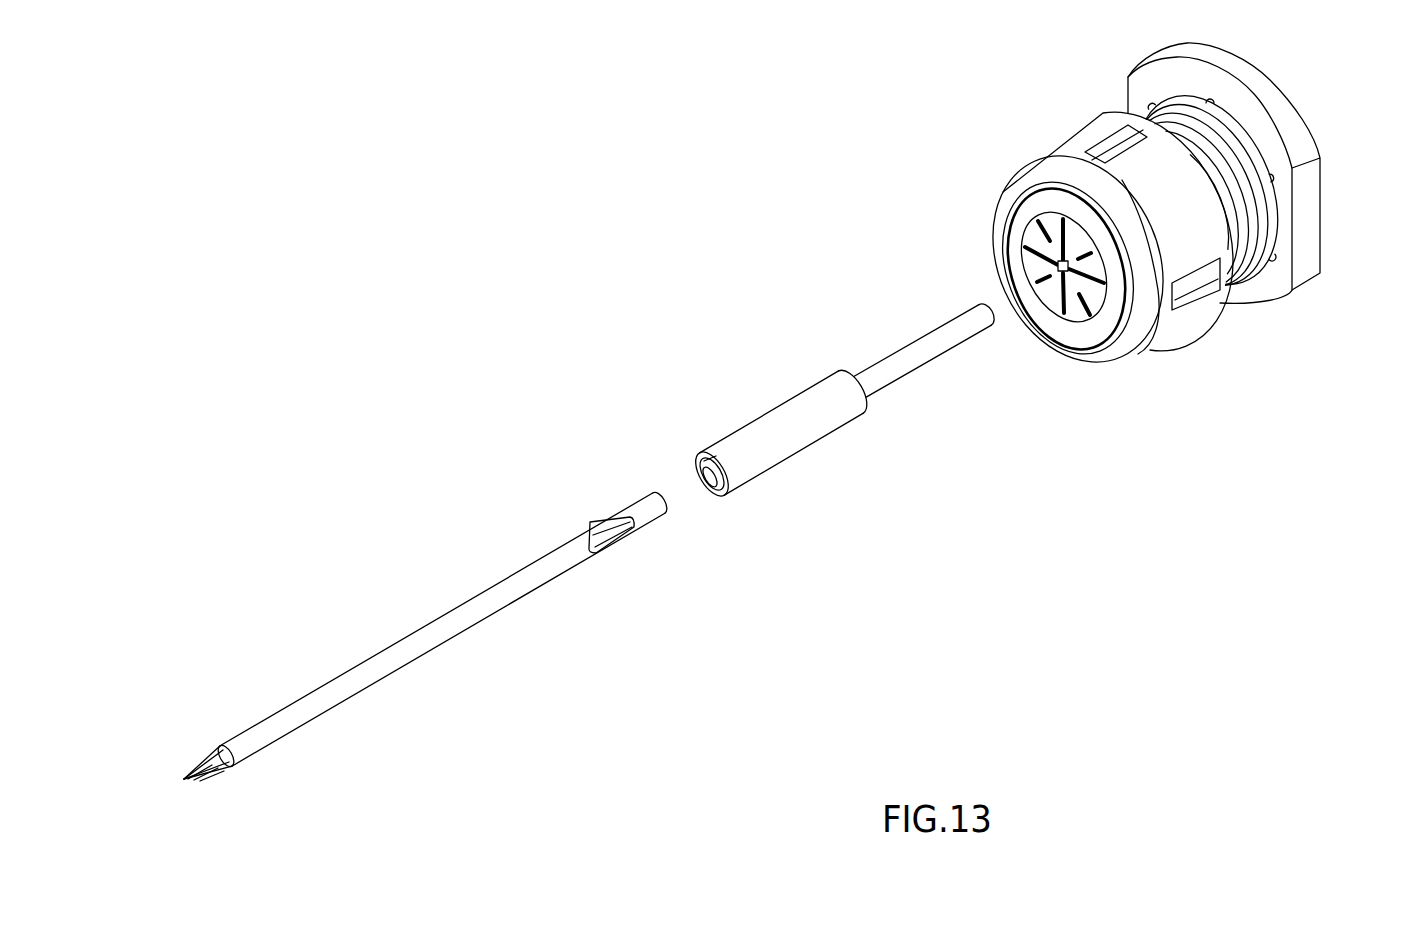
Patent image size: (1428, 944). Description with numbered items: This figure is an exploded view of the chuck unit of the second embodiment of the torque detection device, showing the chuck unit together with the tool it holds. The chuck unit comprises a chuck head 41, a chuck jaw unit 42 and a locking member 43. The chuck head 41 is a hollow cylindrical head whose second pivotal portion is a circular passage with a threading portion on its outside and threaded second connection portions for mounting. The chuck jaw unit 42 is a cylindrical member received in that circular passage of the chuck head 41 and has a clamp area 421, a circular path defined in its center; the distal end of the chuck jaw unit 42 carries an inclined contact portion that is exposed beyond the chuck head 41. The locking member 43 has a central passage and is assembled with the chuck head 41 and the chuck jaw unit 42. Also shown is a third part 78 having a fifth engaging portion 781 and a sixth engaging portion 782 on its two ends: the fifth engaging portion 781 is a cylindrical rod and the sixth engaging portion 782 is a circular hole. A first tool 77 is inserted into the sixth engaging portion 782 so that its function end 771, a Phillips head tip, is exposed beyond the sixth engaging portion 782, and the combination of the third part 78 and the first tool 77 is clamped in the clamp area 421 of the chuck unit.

The chuck head 41 is at (1305, 247).
The chuck jaw unit 42 is at (1037, 233).
The clamp area 421 is at (1076, 283).
The locking member 43 is at (1173, 330).
The first tool 77 is at (400, 649).
The function end 771 is at (212, 755).
The third part 78 is at (780, 453).
The fifth engaging portion 781 is at (903, 368).
The sixth engaging portion 782 is at (725, 488).